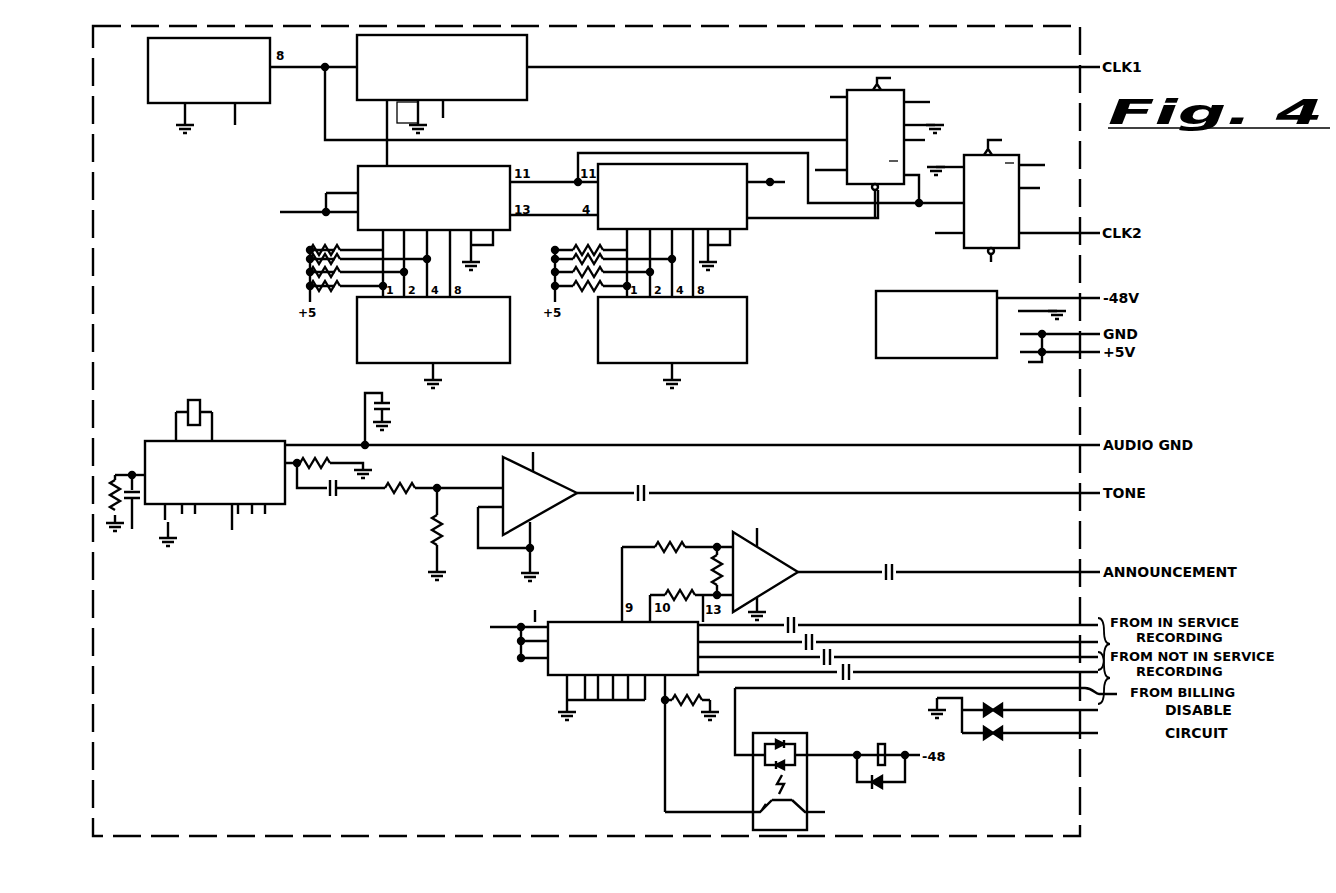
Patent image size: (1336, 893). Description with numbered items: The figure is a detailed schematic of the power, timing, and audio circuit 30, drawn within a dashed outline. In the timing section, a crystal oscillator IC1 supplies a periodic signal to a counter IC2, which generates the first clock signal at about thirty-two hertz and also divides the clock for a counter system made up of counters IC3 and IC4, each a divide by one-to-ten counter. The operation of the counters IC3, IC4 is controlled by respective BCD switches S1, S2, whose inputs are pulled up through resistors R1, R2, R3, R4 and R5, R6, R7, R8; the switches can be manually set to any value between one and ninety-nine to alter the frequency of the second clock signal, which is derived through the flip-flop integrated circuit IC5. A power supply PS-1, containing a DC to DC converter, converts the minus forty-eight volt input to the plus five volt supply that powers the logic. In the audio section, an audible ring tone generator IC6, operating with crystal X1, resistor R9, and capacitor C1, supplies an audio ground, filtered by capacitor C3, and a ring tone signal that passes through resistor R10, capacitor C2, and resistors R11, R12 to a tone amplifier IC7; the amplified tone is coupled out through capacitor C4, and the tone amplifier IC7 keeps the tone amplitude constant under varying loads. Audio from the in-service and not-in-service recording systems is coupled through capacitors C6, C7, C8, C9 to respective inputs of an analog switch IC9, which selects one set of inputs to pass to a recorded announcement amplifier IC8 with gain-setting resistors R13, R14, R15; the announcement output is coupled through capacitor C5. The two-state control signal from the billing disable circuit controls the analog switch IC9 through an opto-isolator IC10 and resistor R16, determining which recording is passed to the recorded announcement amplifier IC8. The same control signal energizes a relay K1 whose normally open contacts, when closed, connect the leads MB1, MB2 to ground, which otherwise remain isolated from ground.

The power, timing, and audio circuit 30 is at (120, 682).
The crystal oscillator IC1 is at (148, 67).
The counter IC2 is at (527, 45).
The counter IC3 is at (455, 166).
The counter IC4 is at (740, 164).
The integrated circuit IC5 is at (923, 172).
The audible ring tone generator IC6 is at (245, 441).
The tone amplifier IC7 is at (548, 510).
The recorded announcement amplifier IC8 is at (780, 590).
The analog switch IC9 is at (548, 672).
The opto-isolator IC10 is at (753, 780).
The BCD switch S1 is at (470, 363).
The BCD switch S2 is at (713, 363).
The power supply PS-1 is at (876, 325).
The crystal X1 is at (199, 412).
The relay K1 is at (881, 754).
The lead MB1 is at (1049, 704).
The lead MB2 is at (1049, 728).
The resistor R1 is at (331, 250).
The resistor R2 is at (355, 261).
The resistor R3 is at (343, 274).
The resistor R4 is at (333, 288).
The resistor R5 is at (575, 250).
The resistor R6 is at (599, 261).
The resistor R7 is at (588, 274).
The resistor R8 is at (577, 288).
The resistor R9 is at (111, 495).
The resistor R10 is at (328, 462).
The resistor R11 is at (400, 479).
The resistor R12 is at (422, 534).
The resistor R13 is at (704, 571).
The resistor R14 is at (677, 539).
The resistor R15 is at (691, 589).
The resistor R16 is at (690, 743).
The capacitor C1 is at (137, 511).
The capacitor C2 is at (327, 497).
The capacitor C3 is at (386, 420).
The capacitor C4 is at (640, 495).
The capacitor C5 is at (888, 576).
The capacitor C6 is at (802, 620).
The capacitor C7 is at (820, 637).
The capacitor C8 is at (838, 652).
The capacitor C9 is at (857, 667).